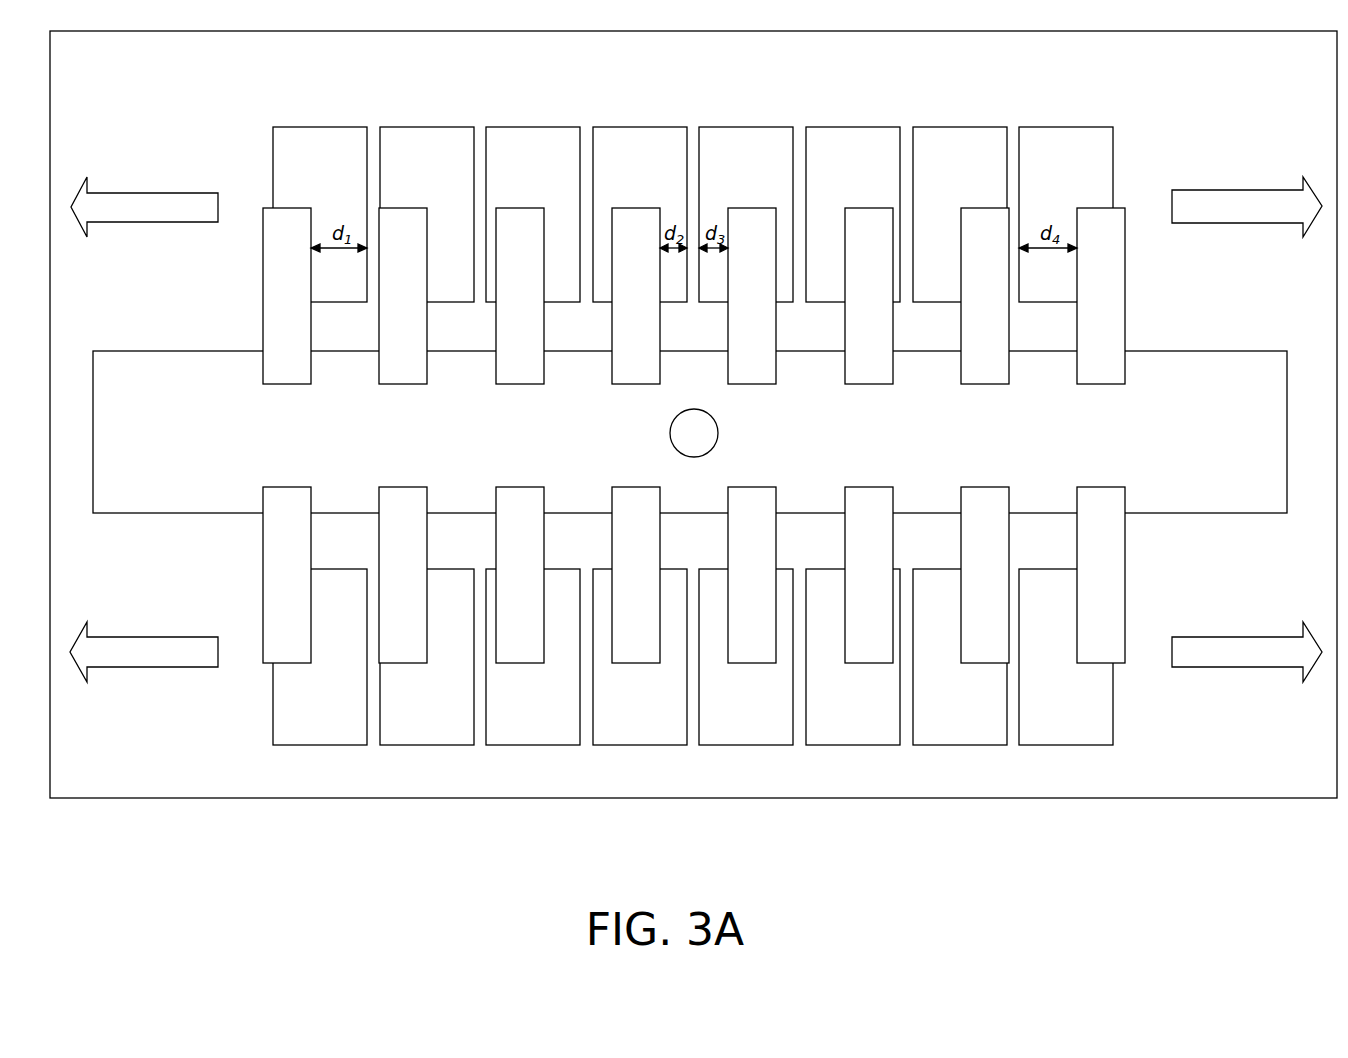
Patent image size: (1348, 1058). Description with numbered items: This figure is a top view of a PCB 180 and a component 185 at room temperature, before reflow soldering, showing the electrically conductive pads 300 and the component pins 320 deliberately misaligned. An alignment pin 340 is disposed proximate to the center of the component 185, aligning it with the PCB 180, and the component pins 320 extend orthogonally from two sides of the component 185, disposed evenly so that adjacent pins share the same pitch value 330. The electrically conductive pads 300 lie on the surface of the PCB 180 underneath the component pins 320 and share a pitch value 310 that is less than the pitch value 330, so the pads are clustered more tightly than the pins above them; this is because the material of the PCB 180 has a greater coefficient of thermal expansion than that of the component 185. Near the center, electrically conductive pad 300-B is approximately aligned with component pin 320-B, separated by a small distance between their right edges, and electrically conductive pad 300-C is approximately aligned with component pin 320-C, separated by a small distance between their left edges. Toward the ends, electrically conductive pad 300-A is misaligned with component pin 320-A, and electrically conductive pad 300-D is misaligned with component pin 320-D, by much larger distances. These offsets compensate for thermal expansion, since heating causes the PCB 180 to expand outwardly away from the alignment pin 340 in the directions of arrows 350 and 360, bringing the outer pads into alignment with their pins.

The electrically conductive pads 300 is at (693, 392).
The electrically conductive pad 300-A is at (292, 181).
The electrically conductive pad 300-B is at (612, 181).
The electrically conductive pad 300-C is at (719, 181).
The electrically conductive pad 300-D is at (1066, 214).
The pitch value 310 is at (427, 123).
The component pins 320 is at (694, 435).
The component pin 320-A is at (287, 296).
The component pin 320-B is at (636, 296).
The component pin 320-C is at (752, 296).
The component pin 320-D is at (1101, 296).
The pitch value 330 is at (403, 388).
The alignment pin 340 is at (676, 444).
The arrow 350 is at (144, 429).
The arrow 360 is at (1247, 429).
The PCB 180 is at (1189, 147).
The component 185 is at (1189, 444).